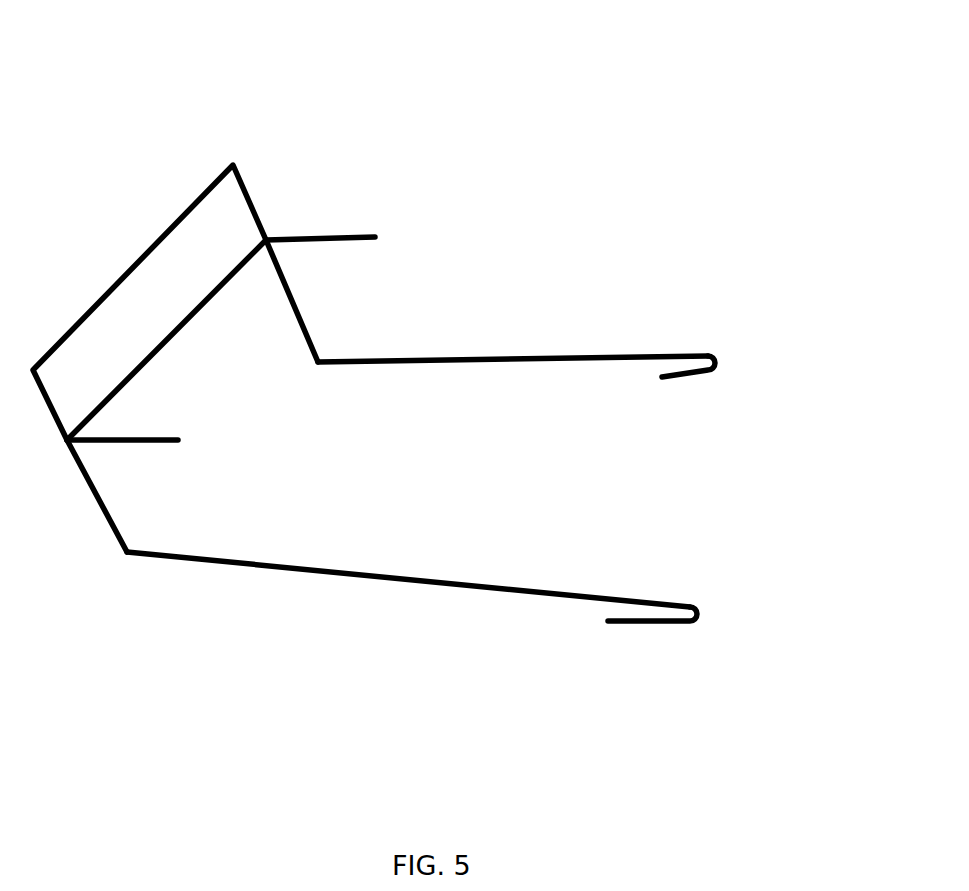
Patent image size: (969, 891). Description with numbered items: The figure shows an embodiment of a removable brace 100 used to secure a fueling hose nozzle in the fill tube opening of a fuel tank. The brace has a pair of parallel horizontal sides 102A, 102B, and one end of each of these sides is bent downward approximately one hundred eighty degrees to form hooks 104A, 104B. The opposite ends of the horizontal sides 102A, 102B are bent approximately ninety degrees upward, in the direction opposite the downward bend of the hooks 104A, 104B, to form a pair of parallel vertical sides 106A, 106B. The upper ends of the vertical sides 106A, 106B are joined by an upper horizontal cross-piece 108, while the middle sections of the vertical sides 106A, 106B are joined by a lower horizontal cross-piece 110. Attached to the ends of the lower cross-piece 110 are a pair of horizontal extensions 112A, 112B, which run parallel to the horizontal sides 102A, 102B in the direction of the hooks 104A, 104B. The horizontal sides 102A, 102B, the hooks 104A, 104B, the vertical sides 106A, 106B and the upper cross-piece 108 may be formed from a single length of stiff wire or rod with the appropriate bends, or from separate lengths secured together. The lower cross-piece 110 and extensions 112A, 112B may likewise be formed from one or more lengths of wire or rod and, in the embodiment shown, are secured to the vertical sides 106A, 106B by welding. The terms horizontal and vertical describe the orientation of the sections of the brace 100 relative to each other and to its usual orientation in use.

The removable brace 100 is at (587, 125).
The horizontal side 102A is at (337, 573).
The horizontal side 102B is at (547, 358).
The hook 104A is at (642, 625).
The hook 104B is at (727, 358).
The vertical side 106A is at (92, 498).
The vertical side 106B is at (308, 327).
The upper horizontal cross-piece 108 is at (157, 233).
The lower horizontal cross-piece 110 is at (173, 337).
The horizontal extension 112A is at (133, 445).
The horizontal extension 112B is at (337, 235).